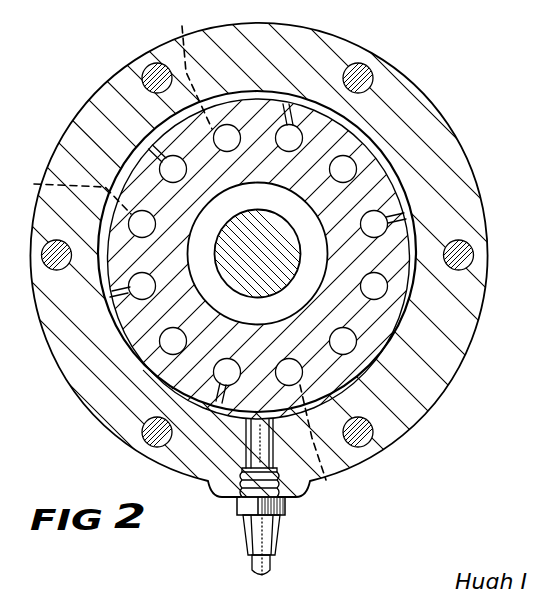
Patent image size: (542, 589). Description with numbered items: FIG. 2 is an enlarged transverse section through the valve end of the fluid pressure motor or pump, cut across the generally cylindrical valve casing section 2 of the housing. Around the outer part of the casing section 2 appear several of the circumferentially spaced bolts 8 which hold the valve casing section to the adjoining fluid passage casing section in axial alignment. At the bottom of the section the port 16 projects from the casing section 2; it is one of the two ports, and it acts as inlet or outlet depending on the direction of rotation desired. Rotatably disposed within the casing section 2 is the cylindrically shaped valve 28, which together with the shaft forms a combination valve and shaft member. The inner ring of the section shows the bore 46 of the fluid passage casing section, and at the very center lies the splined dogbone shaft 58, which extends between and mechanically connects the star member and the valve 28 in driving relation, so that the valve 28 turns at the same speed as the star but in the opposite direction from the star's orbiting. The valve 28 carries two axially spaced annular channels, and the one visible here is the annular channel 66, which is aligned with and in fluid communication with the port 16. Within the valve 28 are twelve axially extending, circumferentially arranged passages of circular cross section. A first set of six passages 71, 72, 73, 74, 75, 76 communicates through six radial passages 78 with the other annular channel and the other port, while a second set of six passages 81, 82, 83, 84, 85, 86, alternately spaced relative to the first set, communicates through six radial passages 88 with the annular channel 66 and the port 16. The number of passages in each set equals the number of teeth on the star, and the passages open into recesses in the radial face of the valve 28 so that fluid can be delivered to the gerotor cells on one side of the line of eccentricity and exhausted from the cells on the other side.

The valve casing section 2 is at (475, 327).
The bolts 8 is at (146, 89).
The outlet port 16 is at (277, 527).
The valve 28 is at (143, 140).
The bore 46 is at (212, 199).
The shaft (dogbone) 58 is at (274, 250).
The annular channel 66 is at (389, 161).
The passage 71 is at (175, 351).
The passage 72 is at (155, 225).
The passage 73 is at (233, 128).
The passage 74 is at (348, 178).
The passage 75 is at (392, 271).
The passage 76 is at (298, 375).
The radial passages 78 is at (340, 485).
The passage 81 is at (236, 370).
The passage 82 is at (150, 296).
The passage 83 is at (178, 162).
The passage 84 is at (303, 142).
The passage 85 is at (363, 227).
The passage 86 is at (346, 332).
The radial passages 88 is at (368, 213).